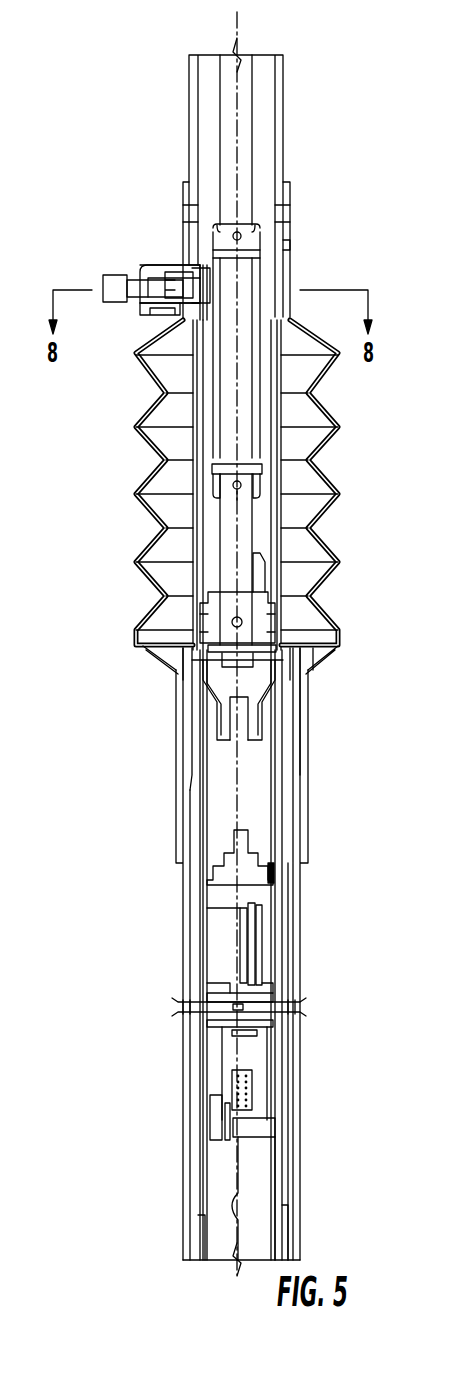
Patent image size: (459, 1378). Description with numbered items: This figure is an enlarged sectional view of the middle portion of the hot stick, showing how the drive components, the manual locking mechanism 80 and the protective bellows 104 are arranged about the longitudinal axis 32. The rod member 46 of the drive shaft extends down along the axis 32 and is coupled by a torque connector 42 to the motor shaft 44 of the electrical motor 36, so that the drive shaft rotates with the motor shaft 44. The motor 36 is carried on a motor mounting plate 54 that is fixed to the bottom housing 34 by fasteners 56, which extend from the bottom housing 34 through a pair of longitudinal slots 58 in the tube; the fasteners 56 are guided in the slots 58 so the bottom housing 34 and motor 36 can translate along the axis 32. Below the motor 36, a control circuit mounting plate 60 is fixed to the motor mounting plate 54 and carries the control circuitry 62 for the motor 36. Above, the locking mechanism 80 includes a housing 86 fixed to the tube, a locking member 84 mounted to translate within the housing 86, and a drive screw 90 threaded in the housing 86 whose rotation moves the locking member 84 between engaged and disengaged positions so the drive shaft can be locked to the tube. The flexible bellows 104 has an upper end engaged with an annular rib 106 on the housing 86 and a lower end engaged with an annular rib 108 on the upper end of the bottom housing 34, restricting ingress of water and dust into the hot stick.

The longitudinal axis 32 is at (238, 32).
The bottom housing 34 is at (170, 1228).
The electrical motor 36 is at (218, 870).
The torque connector 42 is at (215, 683).
The motor shaft 44 is at (238, 708).
The rod member 46 is at (220, 80).
The motor mounting plate 54 is at (212, 1000).
The fasteners 56 is at (180, 1010).
The longitudinal slots 58 is at (283, 905).
The control circuit mounting plate 60 is at (210, 1030).
The control circuitry 62 is at (212, 1078).
The locking mechanism 80 is at (96, 256).
The locking member 84 is at (200, 268).
The housing 86 is at (145, 313).
The drive screw 90 is at (108, 278).
The flexible bellows 104 is at (148, 432).
The annular rib 106 is at (333, 367).
The annular rib 108 is at (315, 640).